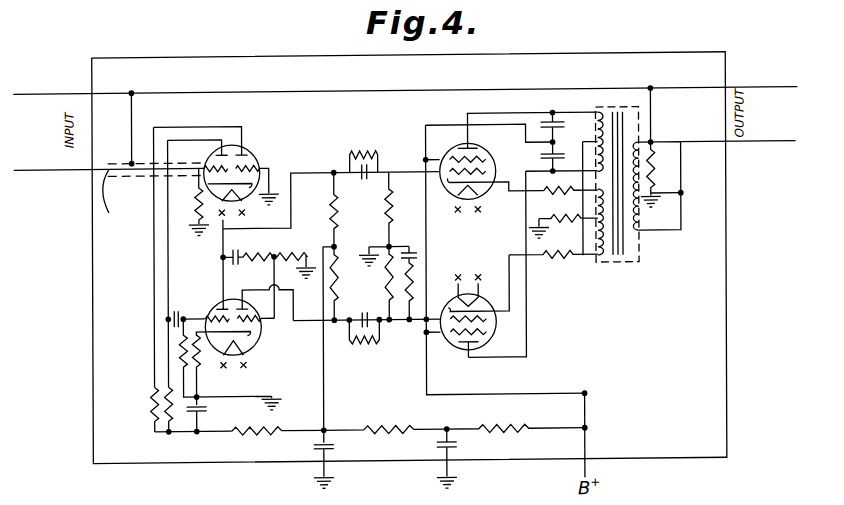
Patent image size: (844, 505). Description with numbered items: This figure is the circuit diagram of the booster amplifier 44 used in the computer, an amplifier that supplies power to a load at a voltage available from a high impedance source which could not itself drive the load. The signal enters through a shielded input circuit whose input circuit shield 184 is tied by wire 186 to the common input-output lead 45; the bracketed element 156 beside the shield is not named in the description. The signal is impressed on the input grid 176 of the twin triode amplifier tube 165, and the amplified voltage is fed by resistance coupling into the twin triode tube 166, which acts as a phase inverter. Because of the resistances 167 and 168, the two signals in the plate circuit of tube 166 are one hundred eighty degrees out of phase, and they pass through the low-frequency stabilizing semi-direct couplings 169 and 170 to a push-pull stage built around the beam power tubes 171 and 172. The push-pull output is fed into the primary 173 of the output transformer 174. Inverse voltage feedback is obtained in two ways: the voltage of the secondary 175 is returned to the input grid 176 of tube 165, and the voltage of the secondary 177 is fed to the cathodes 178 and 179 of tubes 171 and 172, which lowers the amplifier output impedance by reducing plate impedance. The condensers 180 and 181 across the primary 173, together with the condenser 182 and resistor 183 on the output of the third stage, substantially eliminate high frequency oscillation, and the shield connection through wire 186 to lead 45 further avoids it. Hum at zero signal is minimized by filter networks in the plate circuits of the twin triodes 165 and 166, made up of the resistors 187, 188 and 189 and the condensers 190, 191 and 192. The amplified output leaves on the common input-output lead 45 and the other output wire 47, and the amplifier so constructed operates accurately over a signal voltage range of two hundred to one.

The booster amplifier 44 is at (703, 286).
The common input-output lead 45 is at (52, 86).
The output wire 47 is at (770, 151).
The conductor 156 is at (123, 197).
The twin triode amplifier tube 165 is at (251, 153).
The twin triode tube 166 is at (215, 306).
The resistance 167 is at (245, 245).
The resistance 168 is at (296, 248).
The low-frequency stabilizing semi-direct coupling 169 is at (360, 155).
The low-frequency stabilizing semi-direct coupling 170 is at (367, 346).
The beam power tube 171 is at (458, 149).
The beam power tube 172 is at (486, 300).
The primary 173 is at (597, 141).
The output transformer 174 is at (612, 112).
The secondary 175 is at (642, 156).
The input grid 176 is at (210, 160).
The secondary 177 is at (590, 210).
The cathode 178 is at (501, 188).
The cathode 179 is at (504, 318).
The condenser 180 is at (545, 127).
The condenser 181 is at (541, 164).
The condenser 182 is at (390, 241).
The resistor 183 is at (414, 268).
The input circuit shield 184 is at (148, 176).
The wire 186 is at (133, 117).
The resistor 187 is at (272, 433).
The resistor 188 is at (403, 417).
The resistor 189 is at (490, 431).
The condenser 190 is at (204, 412).
The condenser 191 is at (311, 450).
The condenser 192 is at (460, 450).